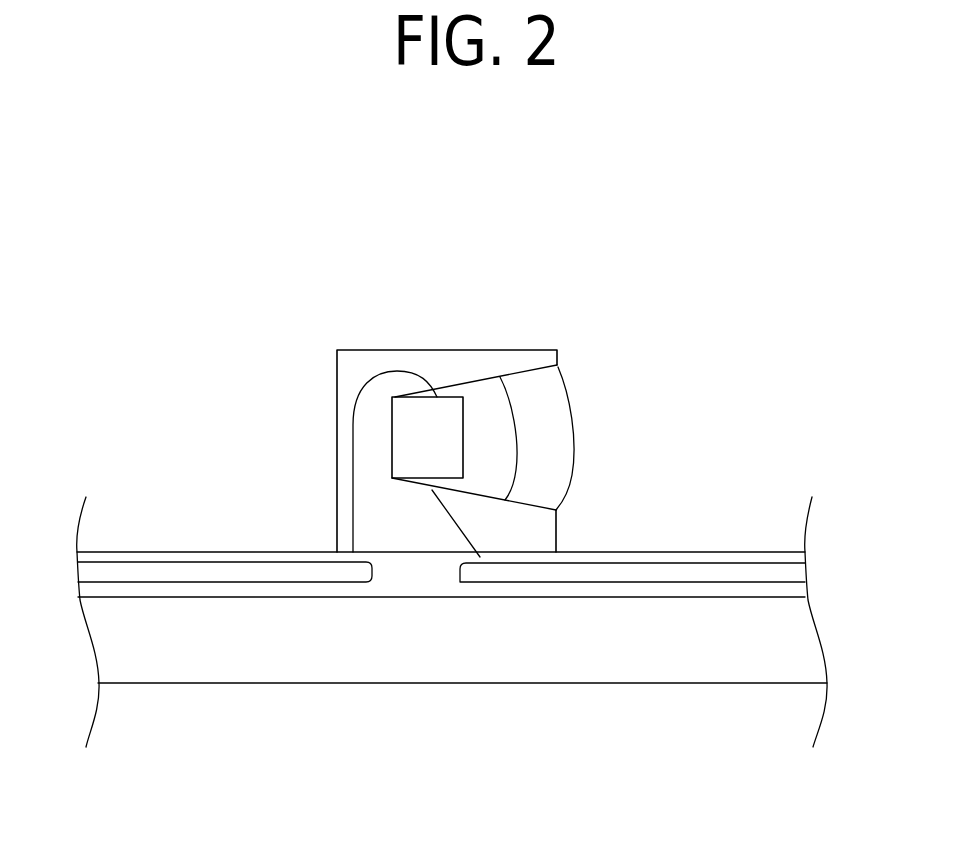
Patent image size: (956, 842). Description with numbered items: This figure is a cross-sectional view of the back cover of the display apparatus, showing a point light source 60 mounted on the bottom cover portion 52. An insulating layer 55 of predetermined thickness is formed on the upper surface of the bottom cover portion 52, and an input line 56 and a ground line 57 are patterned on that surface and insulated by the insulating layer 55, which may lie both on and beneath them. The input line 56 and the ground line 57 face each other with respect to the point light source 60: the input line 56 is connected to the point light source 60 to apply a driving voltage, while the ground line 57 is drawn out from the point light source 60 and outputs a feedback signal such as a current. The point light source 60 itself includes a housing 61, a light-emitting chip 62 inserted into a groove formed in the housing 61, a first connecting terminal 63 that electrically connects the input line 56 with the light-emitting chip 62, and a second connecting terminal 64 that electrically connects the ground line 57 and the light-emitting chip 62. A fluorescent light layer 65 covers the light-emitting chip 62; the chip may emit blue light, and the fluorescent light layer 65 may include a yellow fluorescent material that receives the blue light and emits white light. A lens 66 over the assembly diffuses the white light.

The bottom cover portion 52 is at (422, 640).
The insulating layer 55 is at (547, 597).
The input line 56 is at (665, 575).
The ground line 57 is at (242, 573).
The point light source 60 is at (610, 222).
The housing 61 is at (473, 363).
The light-emitting chip 62 is at (443, 413).
The first connecting terminal 63 is at (433, 513).
The second connecting terminal 64 is at (388, 373).
The fluorescent light layer 65 is at (493, 397).
The lens 66 is at (560, 389).